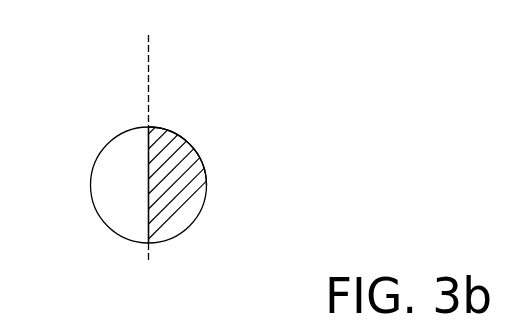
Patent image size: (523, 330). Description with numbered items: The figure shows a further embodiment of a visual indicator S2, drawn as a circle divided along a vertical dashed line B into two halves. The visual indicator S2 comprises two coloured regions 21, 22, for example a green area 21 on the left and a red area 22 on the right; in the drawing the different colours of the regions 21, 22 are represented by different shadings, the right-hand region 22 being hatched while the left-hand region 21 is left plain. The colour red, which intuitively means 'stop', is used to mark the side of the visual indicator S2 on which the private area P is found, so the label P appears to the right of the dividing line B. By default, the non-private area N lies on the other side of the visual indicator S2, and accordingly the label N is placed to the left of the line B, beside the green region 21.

The coloured region 21 is at (100, 186).
The coloured region 22 is at (183, 215).
The visual indicator S2 is at (193, 142).
The boundary plane B is at (148, 38).
The non-private area N is at (111, 78).
The private area P is at (213, 78).